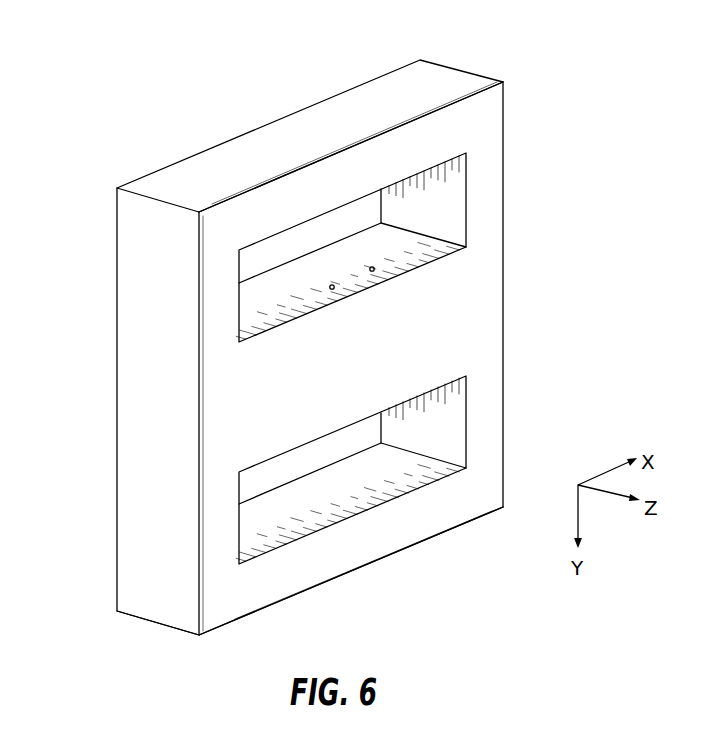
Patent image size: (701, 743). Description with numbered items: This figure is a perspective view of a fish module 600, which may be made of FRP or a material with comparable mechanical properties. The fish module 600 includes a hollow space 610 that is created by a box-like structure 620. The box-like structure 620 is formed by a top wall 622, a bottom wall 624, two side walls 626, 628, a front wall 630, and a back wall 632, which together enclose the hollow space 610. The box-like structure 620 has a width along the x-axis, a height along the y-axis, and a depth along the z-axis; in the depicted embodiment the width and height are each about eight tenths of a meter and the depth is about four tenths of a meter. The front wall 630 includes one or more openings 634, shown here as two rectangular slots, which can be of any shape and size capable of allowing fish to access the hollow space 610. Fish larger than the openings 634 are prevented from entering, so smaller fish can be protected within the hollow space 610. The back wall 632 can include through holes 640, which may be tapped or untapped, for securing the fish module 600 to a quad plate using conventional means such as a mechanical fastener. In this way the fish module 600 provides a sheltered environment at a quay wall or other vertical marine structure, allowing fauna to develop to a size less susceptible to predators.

The fish module 600 is at (110, 144).
The hollow space 610 is at (270, 295).
The box-like structure 620 is at (473, 61).
The top wall 622 is at (273, 132).
The bottom wall 624 is at (157, 626).
The side wall 626 is at (125, 398).
The side wall 628 is at (504, 232).
The front wall 630 is at (497, 318).
The back wall 632 is at (287, 462).
The openings 634 is at (425, 195).
The through holes 640 is at (335, 288).